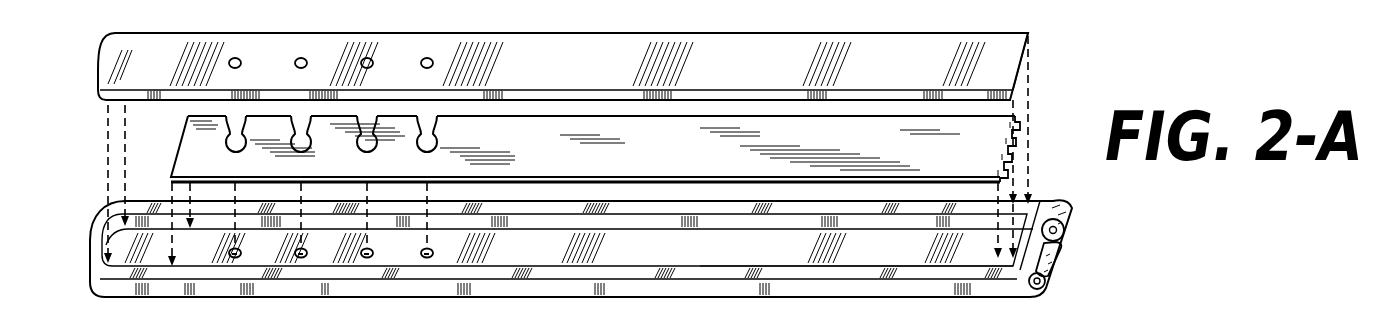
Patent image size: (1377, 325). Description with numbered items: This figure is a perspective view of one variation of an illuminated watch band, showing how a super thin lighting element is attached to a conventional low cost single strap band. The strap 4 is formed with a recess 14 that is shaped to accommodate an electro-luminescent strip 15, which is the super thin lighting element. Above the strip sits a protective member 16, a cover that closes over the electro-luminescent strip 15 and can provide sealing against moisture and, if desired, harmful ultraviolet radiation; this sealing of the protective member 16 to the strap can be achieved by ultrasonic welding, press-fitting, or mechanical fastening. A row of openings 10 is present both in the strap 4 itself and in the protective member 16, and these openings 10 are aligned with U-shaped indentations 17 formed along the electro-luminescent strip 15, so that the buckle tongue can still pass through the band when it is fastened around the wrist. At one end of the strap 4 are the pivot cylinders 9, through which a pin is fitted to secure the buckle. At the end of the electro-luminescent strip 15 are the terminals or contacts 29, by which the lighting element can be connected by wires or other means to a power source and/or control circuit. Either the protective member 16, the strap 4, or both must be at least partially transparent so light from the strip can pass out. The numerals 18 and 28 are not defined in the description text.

The strap 4 is at (948, 268).
The pivot cylinders 9 is at (1062, 230).
The openings 10 is at (372, 61).
The recess 14 is at (572, 245).
The electro-luminescent strip 15 is at (787, 120).
The protective member 16 is at (592, 52).
The U-shaped indentations 17 is at (300, 133).
The floor 18 is at (856, 295).
The hinge pin 28 is at (1065, 301).
The terminals or contacts 29 is at (1030, 152).